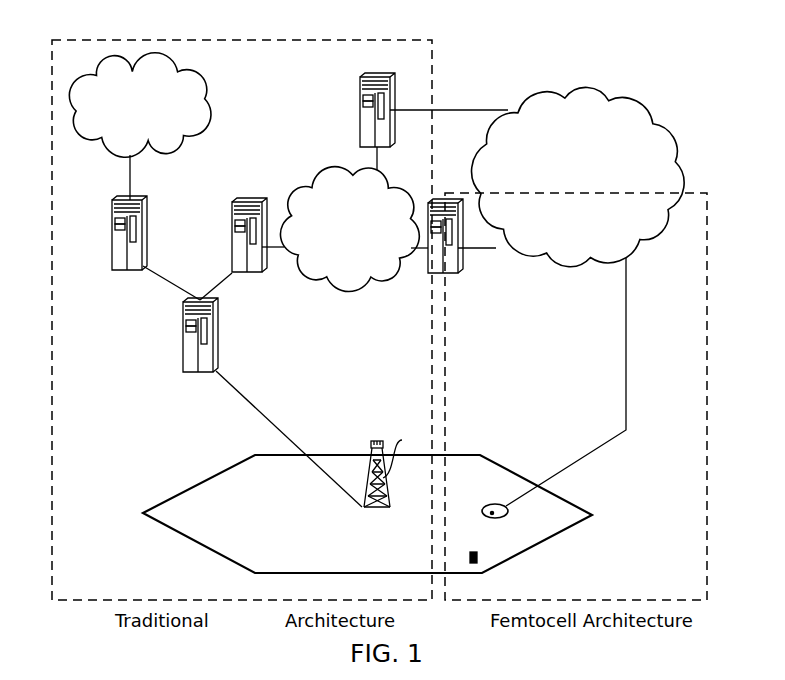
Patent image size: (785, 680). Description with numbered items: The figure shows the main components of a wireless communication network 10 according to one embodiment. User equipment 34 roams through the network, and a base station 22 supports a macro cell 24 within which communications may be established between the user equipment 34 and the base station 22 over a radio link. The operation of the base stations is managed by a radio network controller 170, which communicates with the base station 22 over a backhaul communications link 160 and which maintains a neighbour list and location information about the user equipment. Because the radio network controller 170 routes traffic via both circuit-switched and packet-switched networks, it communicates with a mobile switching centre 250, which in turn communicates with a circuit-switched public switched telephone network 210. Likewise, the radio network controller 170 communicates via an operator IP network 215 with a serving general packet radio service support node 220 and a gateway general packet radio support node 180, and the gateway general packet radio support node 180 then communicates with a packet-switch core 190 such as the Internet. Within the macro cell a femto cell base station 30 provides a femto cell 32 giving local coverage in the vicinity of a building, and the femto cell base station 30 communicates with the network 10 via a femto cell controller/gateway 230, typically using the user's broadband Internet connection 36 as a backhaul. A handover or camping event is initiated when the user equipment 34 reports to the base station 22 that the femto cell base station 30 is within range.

The wireless communication network 10 is at (88, 23).
The public switched telephone network 210 is at (214, 93).
The mobile switching centre 250 is at (130, 271).
The serving general packet radio service support node 220 is at (232, 222).
The radio network controller 170 is at (183, 348).
The gateway general packet radio support node 180 is at (360, 122).
The operator IP network 215 is at (336, 288).
The packet-switch core 190 is at (612, 92).
The femto cell controller/gateway 230 is at (463, 262).
The broadband Internet connection 36 is at (626, 365).
The backhaul communications link 160 is at (250, 400).
The base station 22 is at (372, 478).
The femto cell base station 30 is at (490, 506).
The femto cell 32 is at (497, 506).
The macro cell 24 is at (552, 535).
The user equipment 34 is at (478, 558).